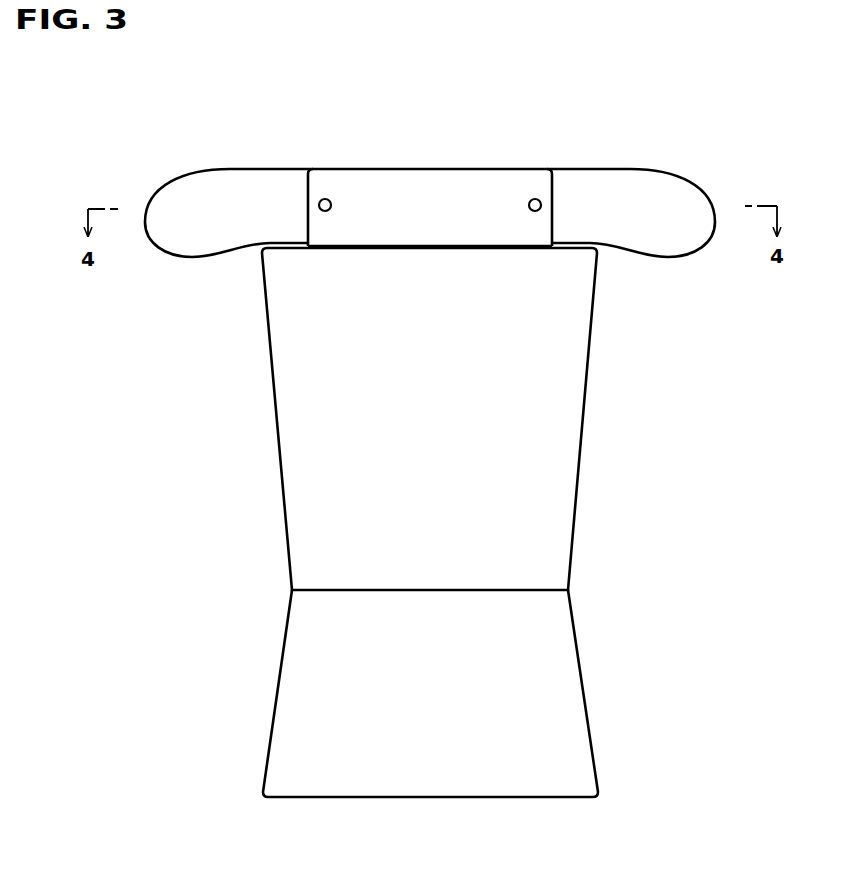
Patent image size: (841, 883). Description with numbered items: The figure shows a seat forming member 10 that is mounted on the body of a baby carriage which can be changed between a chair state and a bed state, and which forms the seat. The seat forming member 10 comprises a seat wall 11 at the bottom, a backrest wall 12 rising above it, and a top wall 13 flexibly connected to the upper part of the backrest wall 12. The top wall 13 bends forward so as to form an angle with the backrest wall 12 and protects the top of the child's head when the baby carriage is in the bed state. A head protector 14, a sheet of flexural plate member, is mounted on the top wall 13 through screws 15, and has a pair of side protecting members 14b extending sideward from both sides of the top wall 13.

The seat forming member 10 is at (193, 463).
The seat wall 11 is at (565, 685).
The backrest wall 12 is at (565, 432).
The top wall 13 is at (417, 178).
The head protector 14 is at (430, 180).
The side protecting members 14b is at (208, 185).
The screws 15 is at (327, 197).